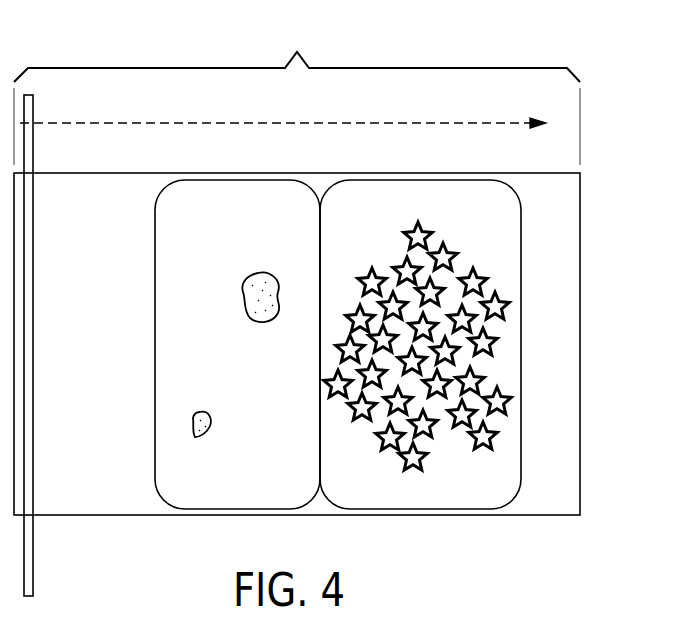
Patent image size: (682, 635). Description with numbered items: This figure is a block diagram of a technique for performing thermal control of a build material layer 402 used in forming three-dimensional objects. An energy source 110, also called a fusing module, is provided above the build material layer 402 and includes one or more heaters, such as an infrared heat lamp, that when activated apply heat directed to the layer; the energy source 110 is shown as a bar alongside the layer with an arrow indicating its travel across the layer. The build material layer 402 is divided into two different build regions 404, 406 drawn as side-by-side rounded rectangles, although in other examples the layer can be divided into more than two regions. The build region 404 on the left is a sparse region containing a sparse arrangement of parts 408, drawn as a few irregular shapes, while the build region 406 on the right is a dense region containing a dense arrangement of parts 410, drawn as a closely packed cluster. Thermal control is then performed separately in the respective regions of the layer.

The build material layer 402 is at (297, 267).
The energy source 110 is at (31, 110).
The build region 404 is at (155, 458).
The build region 406 is at (521, 450).
The parts 408 is at (242, 293).
The parts 410 is at (432, 232).